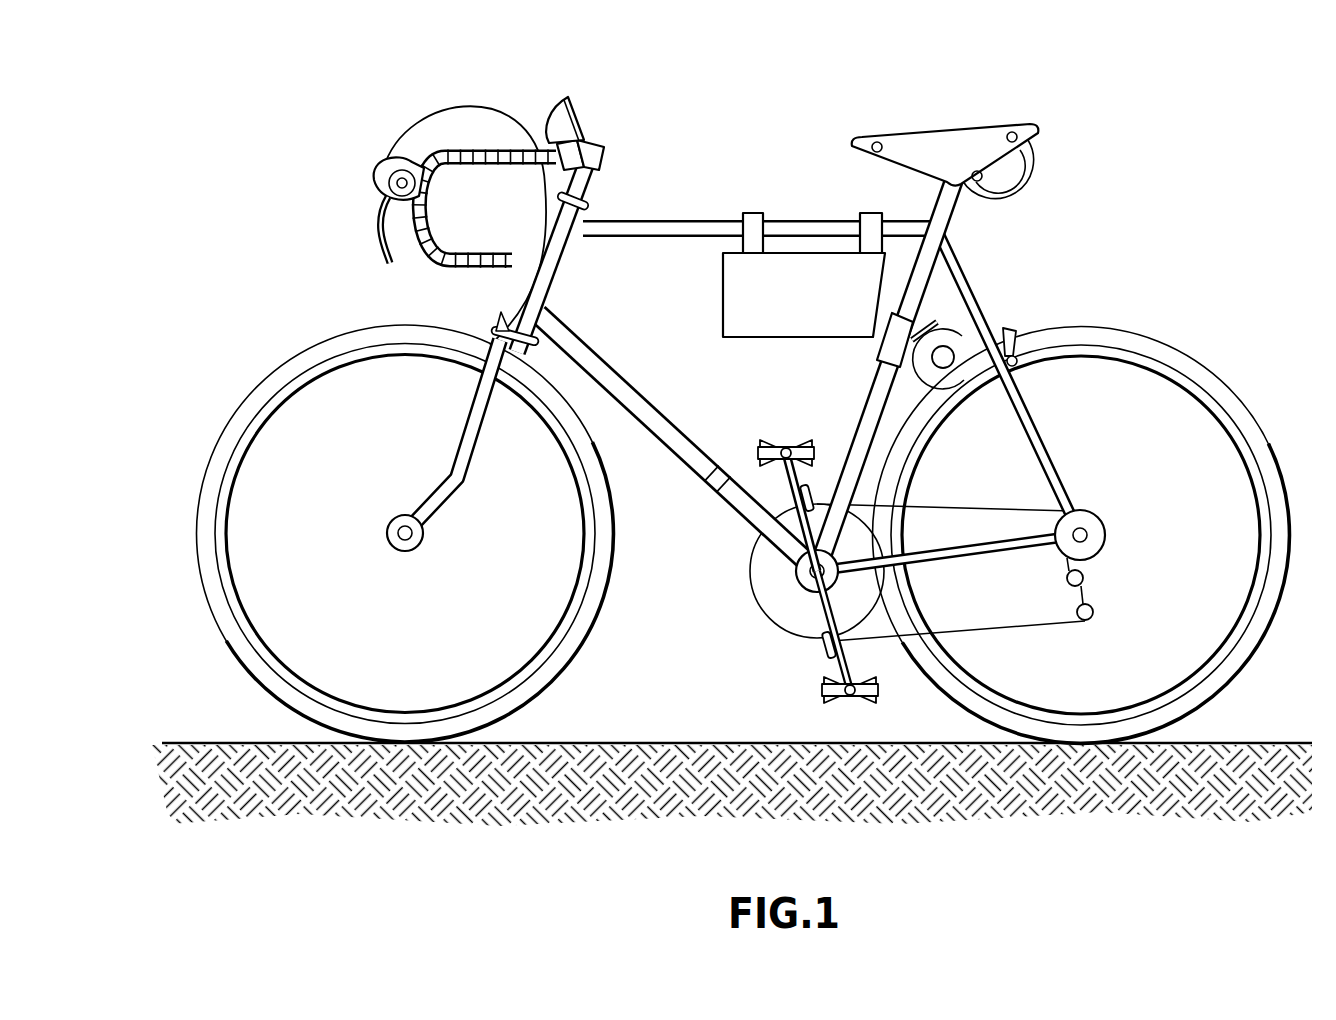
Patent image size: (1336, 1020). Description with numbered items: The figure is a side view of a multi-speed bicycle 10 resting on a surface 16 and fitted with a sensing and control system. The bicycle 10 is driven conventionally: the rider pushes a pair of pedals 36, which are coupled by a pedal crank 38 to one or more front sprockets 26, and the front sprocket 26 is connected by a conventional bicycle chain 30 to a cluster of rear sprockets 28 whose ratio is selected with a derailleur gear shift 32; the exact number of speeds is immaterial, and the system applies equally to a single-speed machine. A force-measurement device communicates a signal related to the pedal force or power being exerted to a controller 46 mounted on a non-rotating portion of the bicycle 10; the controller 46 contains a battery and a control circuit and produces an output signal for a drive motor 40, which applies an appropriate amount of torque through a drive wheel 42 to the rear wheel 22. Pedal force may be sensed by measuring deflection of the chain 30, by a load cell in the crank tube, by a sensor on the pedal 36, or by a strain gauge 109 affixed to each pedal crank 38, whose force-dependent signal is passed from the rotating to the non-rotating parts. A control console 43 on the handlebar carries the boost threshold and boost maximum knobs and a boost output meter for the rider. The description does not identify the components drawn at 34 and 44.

The bicycle 10 is at (352, 152).
The surface 16 is at (656, 740).
The rear wheel 22 is at (1163, 343).
The front sprocket 26 is at (778, 632).
The rear sprockets 28 is at (1103, 520).
The bicycle chain 30 is at (1000, 632).
The derailleur gear shift 32 is at (1094, 607).
The derailleur pulley 34 is at (1085, 574).
The pedals 36 is at (862, 697).
The pedal crank 38 is at (830, 673).
The drive motor 40 is at (947, 352).
The drive wheel 42 is at (1000, 331).
The control console 43 is at (563, 113).
The pack mount straps 44 is at (812, 222).
The controller 46 is at (797, 320).
The strain gauge 109 is at (805, 505).